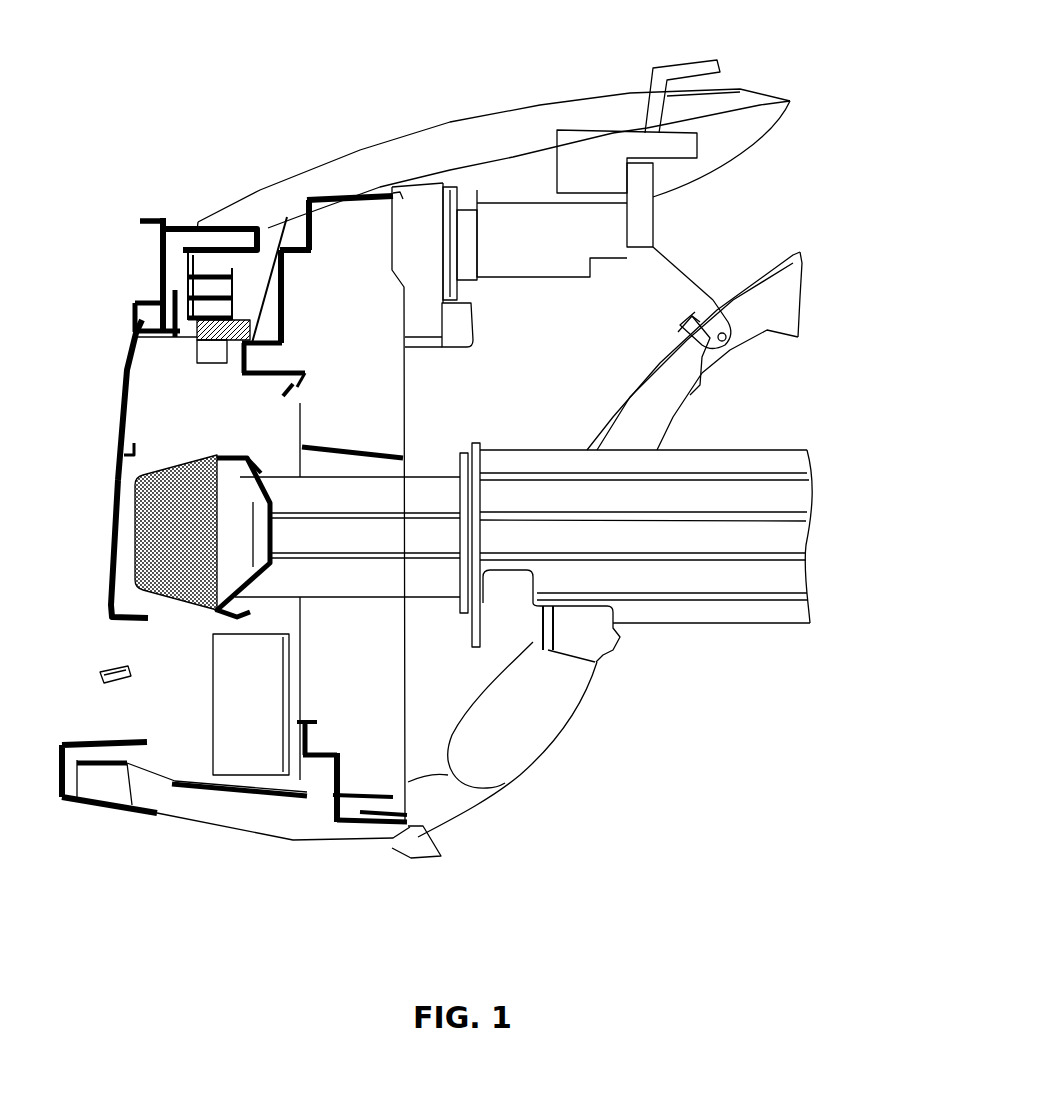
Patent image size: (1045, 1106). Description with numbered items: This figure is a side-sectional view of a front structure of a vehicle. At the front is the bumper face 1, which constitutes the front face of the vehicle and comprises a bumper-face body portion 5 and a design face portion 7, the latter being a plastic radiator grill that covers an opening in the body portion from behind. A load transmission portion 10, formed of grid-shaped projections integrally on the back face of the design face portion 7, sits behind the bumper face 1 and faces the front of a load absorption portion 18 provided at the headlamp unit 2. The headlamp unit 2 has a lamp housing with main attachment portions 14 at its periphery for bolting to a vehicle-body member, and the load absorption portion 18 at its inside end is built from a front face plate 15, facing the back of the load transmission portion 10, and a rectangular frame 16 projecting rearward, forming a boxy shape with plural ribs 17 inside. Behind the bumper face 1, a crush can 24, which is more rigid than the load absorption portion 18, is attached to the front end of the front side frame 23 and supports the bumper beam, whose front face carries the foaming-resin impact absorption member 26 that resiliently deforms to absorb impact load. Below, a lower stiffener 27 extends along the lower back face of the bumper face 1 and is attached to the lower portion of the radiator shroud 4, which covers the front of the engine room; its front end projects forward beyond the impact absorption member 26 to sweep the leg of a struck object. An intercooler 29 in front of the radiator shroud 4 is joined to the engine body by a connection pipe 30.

The bumper face 1 is at (267, 520).
The headlamp unit 2 is at (529, 98).
The radiator shroud 4 is at (355, 188).
The bumper-face body portion 5 is at (118, 553).
The design face portion 7 is at (126, 389).
The load transmission portion 10 is at (168, 227).
The main attachment portion 14 is at (692, 68).
The front face plate 15 is at (158, 253).
The rectangular frame 16 is at (213, 247).
The ribs 17 is at (226, 270).
The load absorption portion 18 is at (253, 287).
The front side frame 23 is at (700, 602).
The crush can 24 is at (432, 474).
The impact absorption member 26 is at (177, 603).
The lower stiffener 27 is at (204, 830).
The intercooler 29 is at (211, 711).
The connection pipe 30 is at (563, 732).